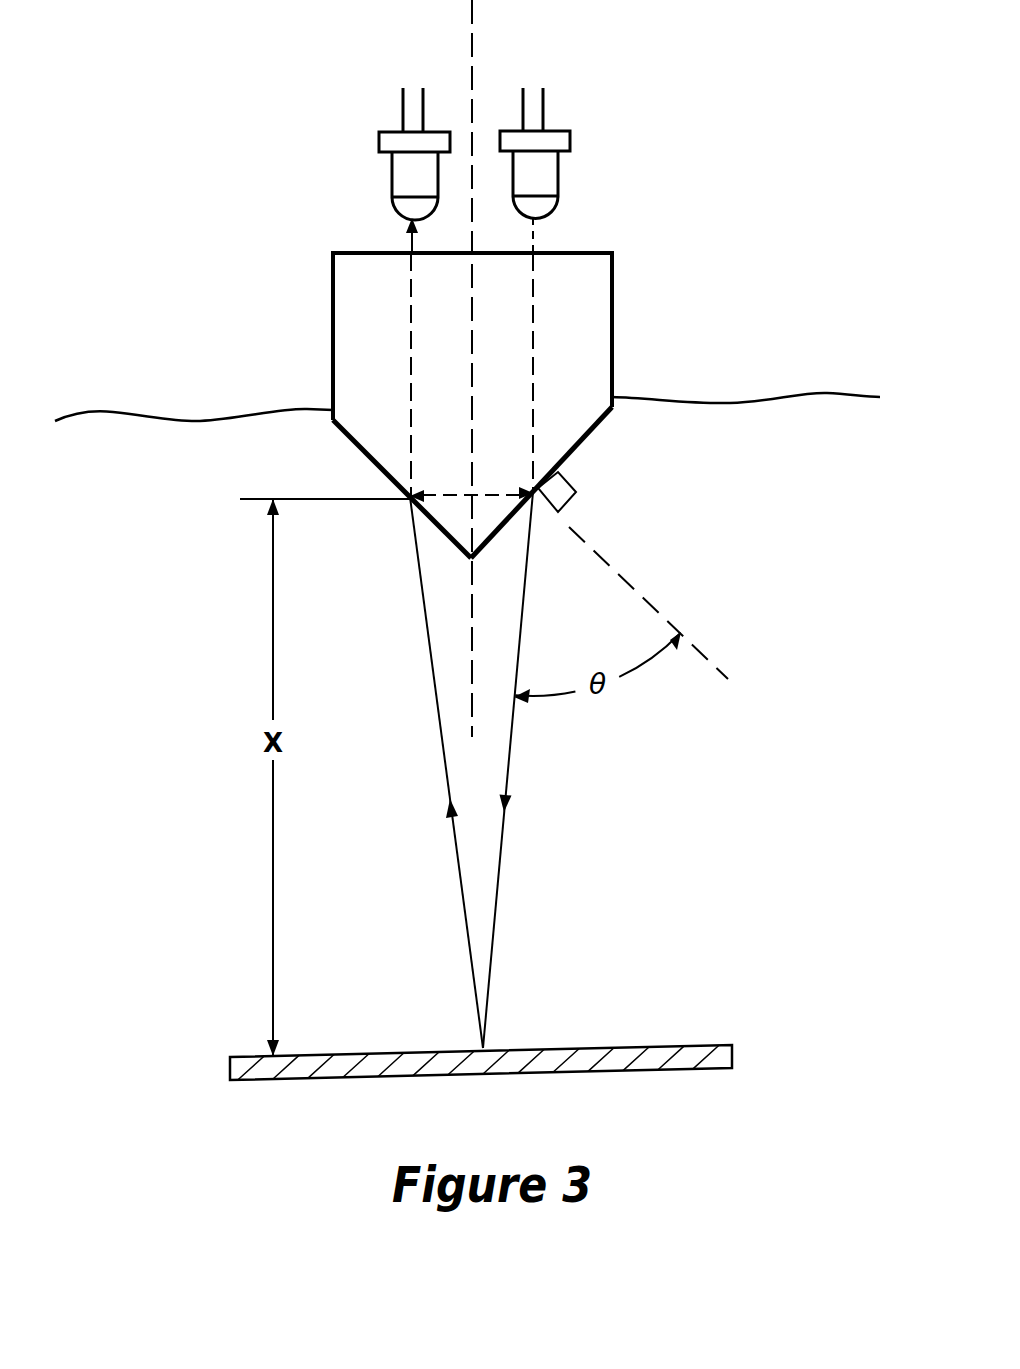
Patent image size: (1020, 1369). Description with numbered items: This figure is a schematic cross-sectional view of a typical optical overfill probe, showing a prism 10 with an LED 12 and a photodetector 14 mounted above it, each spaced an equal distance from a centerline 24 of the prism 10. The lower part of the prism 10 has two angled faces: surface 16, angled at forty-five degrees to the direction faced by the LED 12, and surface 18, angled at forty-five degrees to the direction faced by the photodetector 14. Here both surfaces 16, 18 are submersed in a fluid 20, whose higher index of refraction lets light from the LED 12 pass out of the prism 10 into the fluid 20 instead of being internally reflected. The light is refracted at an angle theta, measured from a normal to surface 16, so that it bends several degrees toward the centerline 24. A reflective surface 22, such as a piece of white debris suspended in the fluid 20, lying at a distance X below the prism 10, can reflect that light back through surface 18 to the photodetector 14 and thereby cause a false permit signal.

The prism 10 is at (598, 320).
The LED 12 is at (550, 175).
The photodetector 14 is at (402, 185).
The surface 16 is at (583, 442).
The surface 18 is at (353, 441).
The fluid 20 is at (736, 821).
The reflective surface 22 is at (613, 1068).
The centerline 24 is at (474, 60).